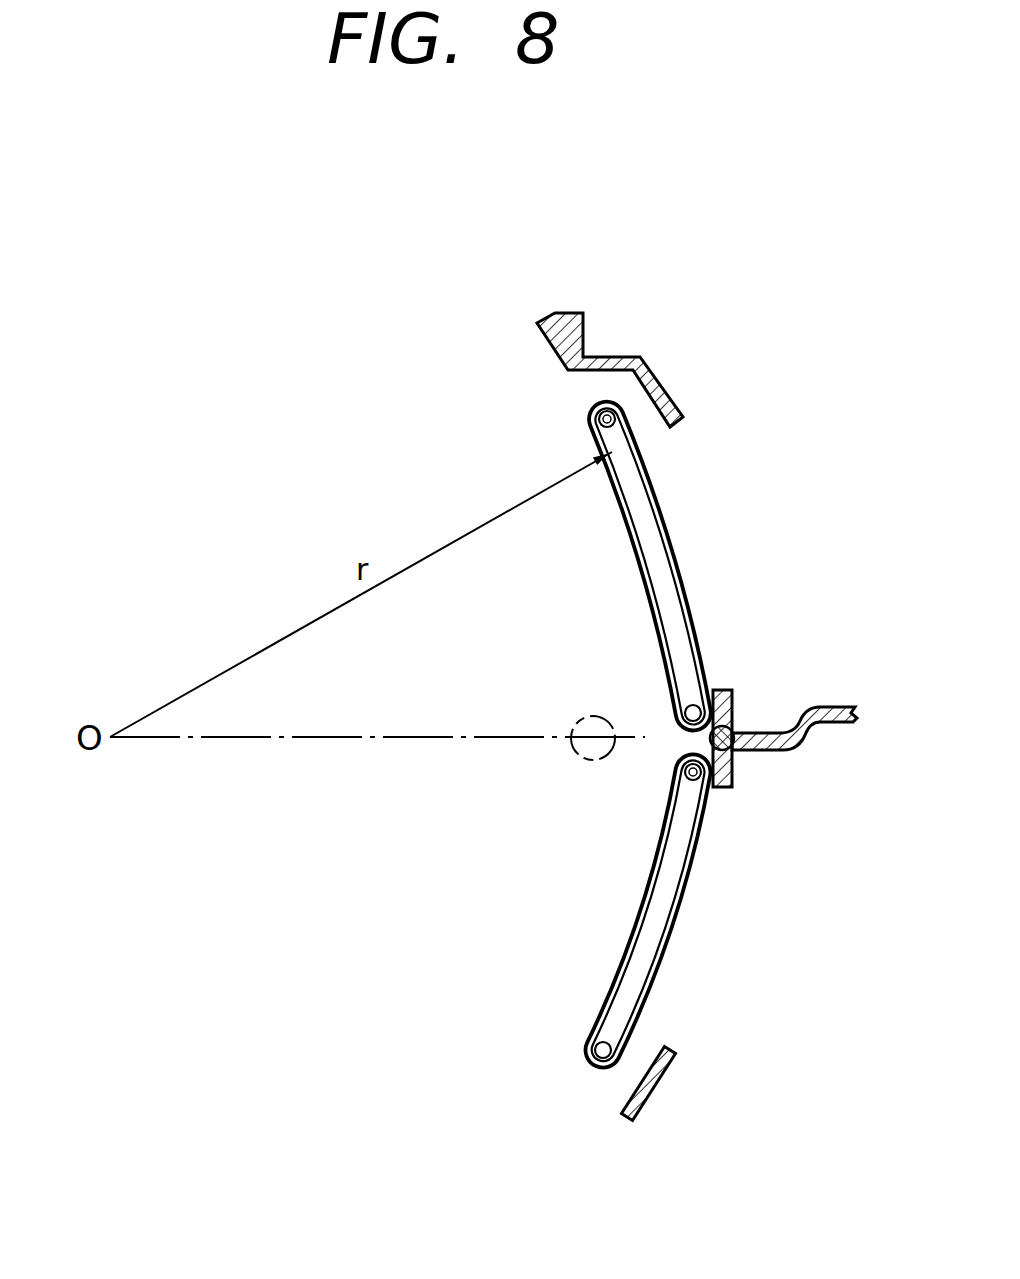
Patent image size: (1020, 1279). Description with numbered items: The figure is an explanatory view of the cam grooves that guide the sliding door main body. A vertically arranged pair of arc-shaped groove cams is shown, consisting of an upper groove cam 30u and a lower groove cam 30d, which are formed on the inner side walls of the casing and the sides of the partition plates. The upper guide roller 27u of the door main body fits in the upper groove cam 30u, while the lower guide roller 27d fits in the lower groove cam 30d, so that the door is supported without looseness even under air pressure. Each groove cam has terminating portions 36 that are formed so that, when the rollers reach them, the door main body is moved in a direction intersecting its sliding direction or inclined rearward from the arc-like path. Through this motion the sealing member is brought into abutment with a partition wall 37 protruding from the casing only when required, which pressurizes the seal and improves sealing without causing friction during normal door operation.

The upper groove cam 30u is at (683, 560).
The lower groove cam 30d is at (684, 932).
The upper guide roller 27u is at (600, 422).
The lower guide roller 27d is at (705, 788).
The terminating portion 36 is at (598, 406).
The partition wall 37 is at (680, 428).